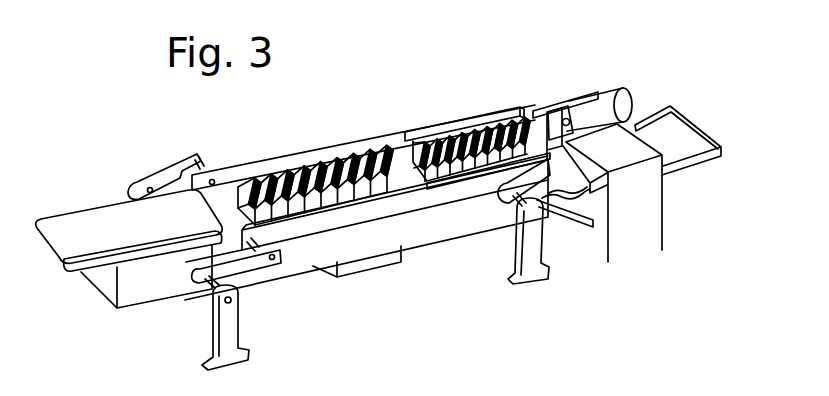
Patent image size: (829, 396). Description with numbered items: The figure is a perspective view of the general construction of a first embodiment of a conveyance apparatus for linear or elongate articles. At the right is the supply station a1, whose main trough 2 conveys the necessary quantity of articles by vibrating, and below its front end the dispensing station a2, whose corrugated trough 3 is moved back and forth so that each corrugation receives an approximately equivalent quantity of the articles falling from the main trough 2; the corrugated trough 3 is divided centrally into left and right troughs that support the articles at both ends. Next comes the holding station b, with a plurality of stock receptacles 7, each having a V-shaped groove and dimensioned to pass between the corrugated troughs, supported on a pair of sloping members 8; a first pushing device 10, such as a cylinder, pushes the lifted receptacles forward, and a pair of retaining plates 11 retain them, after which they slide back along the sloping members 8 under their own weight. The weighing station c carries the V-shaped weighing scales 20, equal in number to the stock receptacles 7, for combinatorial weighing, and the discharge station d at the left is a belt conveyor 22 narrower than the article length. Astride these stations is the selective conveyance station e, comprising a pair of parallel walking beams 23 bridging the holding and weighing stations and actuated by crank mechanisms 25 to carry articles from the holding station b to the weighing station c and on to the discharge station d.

The main trough 2 is at (660, 122).
The corrugated trough 3 is at (533, 156).
The stock receptacle 7 is at (440, 127).
The sloping member 8 is at (582, 228).
The first pushing device 10 is at (578, 103).
The retaining plate 11 is at (422, 136).
The weighing scale 20 is at (268, 172).
The belt conveyor 22 is at (64, 258).
The walking beam 23 is at (353, 141).
The crank mechanism 25 is at (207, 336).
The supply station a1 is at (630, 90).
The dispensing station a2 is at (600, 201).
The holding station b is at (472, 112).
The weighing station c is at (305, 150).
The discharge station d is at (94, 201).
The selective conveyance station e is at (395, 134).